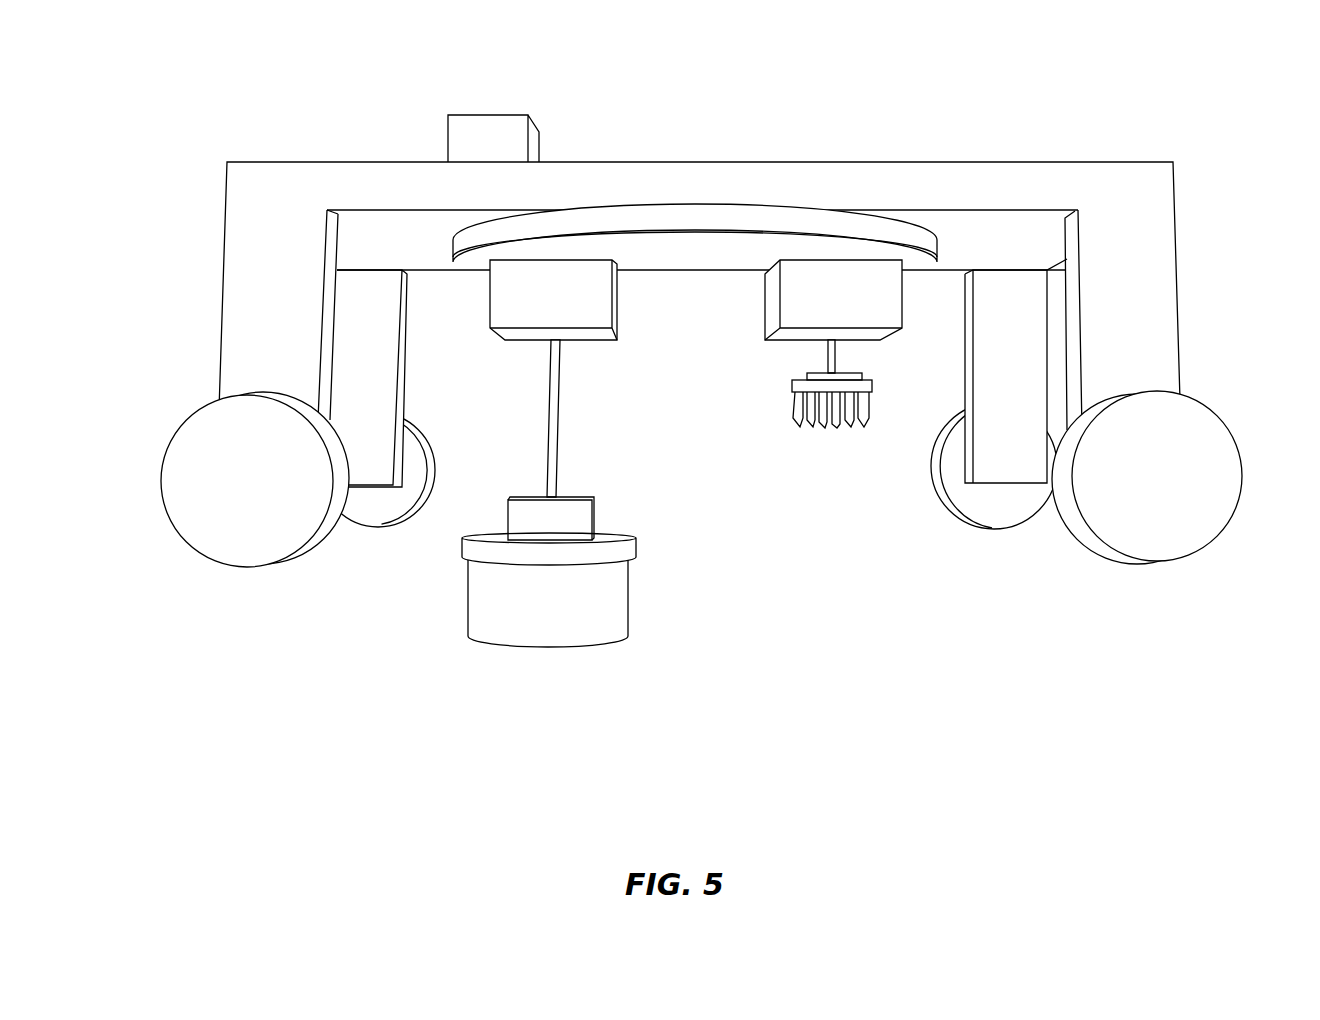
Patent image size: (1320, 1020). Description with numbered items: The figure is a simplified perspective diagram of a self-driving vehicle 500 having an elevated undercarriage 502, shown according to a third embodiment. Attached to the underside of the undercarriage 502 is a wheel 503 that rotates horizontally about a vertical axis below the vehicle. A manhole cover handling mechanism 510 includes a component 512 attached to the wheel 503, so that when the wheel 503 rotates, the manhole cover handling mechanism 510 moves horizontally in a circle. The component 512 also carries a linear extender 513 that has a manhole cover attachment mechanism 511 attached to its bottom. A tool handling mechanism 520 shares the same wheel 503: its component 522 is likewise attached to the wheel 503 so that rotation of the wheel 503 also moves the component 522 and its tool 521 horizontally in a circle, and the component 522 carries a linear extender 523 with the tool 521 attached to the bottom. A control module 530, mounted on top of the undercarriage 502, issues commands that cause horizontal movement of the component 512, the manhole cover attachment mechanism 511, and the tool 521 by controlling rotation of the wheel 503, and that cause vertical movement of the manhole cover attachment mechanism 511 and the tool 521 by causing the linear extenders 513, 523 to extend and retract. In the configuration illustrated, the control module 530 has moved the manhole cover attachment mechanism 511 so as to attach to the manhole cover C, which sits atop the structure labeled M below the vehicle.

The self-driving vehicle 500 is at (1020, 72).
The elevated undercarriage 502 is at (925, 178).
The wheel 503 is at (740, 218).
The manhole cover handling mechanism 510 is at (603, 400).
The manhole cover attachment mechanism 511 is at (562, 535).
The component 512 is at (568, 308).
The linear extender 513 is at (557, 428).
The tool handling mechanism 520 is at (859, 344).
The tool 521 is at (872, 402).
The component 522 is at (854, 308).
The linear extender 523 is at (835, 360).
The control module 530 is at (505, 152).
The manhole cover C is at (637, 545).
The module / container M is at (628, 597).